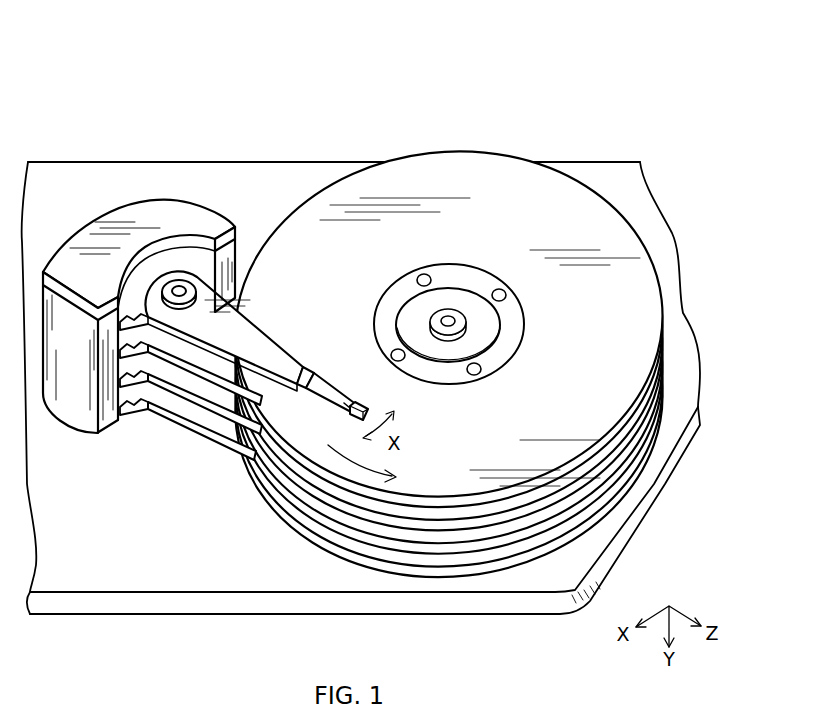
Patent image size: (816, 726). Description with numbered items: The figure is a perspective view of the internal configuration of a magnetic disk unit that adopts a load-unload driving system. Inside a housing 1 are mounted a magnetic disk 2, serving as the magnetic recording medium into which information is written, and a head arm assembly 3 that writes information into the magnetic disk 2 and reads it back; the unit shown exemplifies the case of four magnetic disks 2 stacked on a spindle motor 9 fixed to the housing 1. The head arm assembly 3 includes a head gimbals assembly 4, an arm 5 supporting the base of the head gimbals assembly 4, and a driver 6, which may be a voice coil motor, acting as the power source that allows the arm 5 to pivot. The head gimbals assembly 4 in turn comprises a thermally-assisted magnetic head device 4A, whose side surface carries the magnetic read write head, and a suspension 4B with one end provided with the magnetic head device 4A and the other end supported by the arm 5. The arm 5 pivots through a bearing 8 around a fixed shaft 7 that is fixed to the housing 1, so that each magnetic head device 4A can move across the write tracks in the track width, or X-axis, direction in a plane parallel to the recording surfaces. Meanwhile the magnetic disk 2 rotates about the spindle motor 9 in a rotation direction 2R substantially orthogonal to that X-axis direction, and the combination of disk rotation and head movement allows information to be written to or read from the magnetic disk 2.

The housing 1 is at (598, 177).
The magnetic disk 2 is at (607, 302).
The rotation direction 2R is at (348, 452).
The head arm assembly 3 is at (50, 69).
The head gimbals assembly 4 is at (484, 107).
The magnetic head device 4A is at (357, 392).
The suspension 4B is at (330, 388).
The arm 5 is at (262, 343).
The driver 6 is at (102, 200).
The fixed shaft 7 is at (181, 287).
The bearing 8 is at (163, 280).
The spindle motor 9 is at (447, 335).